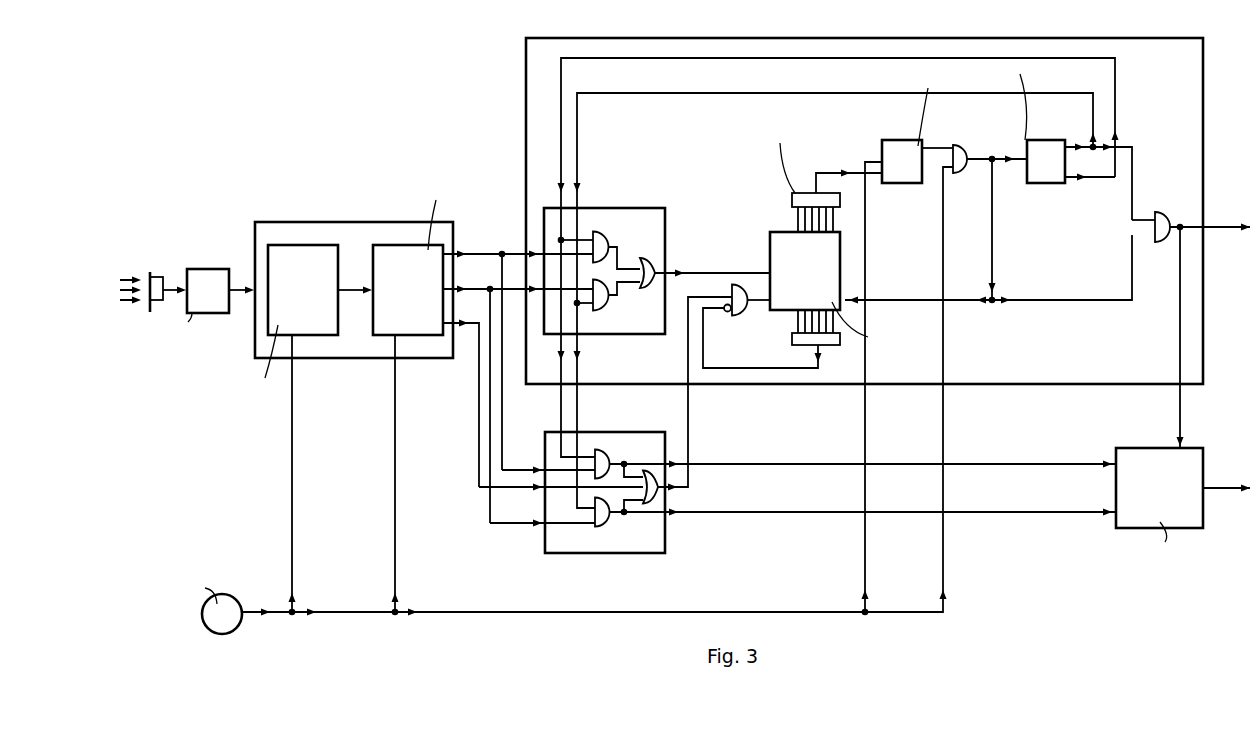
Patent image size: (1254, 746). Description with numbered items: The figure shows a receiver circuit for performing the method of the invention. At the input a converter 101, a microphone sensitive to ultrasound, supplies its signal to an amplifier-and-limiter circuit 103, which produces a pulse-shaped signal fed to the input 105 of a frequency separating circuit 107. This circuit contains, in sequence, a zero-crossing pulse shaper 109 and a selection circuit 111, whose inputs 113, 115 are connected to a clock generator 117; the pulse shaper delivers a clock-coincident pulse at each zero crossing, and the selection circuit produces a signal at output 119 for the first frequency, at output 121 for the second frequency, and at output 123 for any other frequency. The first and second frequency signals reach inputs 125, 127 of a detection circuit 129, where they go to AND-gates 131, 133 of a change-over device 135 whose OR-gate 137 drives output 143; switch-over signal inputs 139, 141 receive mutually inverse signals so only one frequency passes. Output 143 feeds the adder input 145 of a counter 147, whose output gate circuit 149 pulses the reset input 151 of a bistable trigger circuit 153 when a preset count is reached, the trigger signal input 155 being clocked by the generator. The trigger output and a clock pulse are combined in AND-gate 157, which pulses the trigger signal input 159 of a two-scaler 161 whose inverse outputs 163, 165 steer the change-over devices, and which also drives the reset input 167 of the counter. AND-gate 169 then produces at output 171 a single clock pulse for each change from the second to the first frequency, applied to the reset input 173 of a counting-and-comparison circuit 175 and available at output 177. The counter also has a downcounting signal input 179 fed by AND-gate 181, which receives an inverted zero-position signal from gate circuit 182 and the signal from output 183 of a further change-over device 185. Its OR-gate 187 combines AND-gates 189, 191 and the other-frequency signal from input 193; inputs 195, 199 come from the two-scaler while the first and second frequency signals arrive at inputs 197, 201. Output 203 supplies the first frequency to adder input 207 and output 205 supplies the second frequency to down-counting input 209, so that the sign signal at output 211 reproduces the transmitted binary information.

The converter 101 is at (158, 276).
The amplifier-and-limiter circuit 103 is at (203, 268).
The input 105 is at (253, 297).
The frequency separating circuit 107 is at (280, 222).
The zero-crossing pulse shaper 109 is at (318, 244).
The selection circuit 111 is at (400, 244).
The input 113 is at (293, 340).
The input 115 is at (395, 340).
The clock generator 117 is at (222, 595).
The output 119 is at (458, 252).
The output 121 is at (443, 267).
The output 123 is at (443, 307).
The input 125 is at (518, 253).
The input 127 is at (522, 296).
The detection circuit 129 is at (526, 66).
The AND-gate 131 is at (602, 238).
The AND-gate 133 is at (605, 304).
The change-over device 135 is at (640, 207).
The OR-gate 137 is at (650, 259).
The switch-over signal input 139 is at (561, 206).
The switch-over signal input 141 is at (578, 206).
The output 143 is at (675, 271).
The adder input 145 is at (770, 266).
The counter 147 is at (778, 232).
The output gate circuit 149 is at (800, 193).
The reset input 151 is at (883, 184).
The bistable trigger circuit 153 is at (918, 146).
The trigger signal input 155 is at (882, 159).
The AND-gate 157 is at (958, 146).
The trigger signal input 159 is at (1027, 160).
The bistable trigger circuit 161 is at (1043, 140).
The output 163 is at (1068, 148).
The output 165 is at (1068, 178).
The reset input 167 is at (848, 296).
The AND-gate 169 is at (1158, 215).
The output 171 is at (1172, 222).
The reset input 173 is at (1183, 447).
The counting-and-comparison circuit 175 is at (1203, 460).
The output 177 is at (1205, 226).
The downcounting signal input 179 is at (766, 312).
The AND-gate 181 is at (740, 317).
The gate circuit 182 is at (779, 342).
The output 183 is at (672, 490).
The further change-over device 185 is at (658, 432).
The OR-gate 187 is at (652, 504).
The AND-gate 189 is at (611, 461).
The AND-gate 191 is at (605, 525).
The input 193 is at (545, 488).
The input 195 is at (561, 433).
The input 197 is at (544, 468).
The input 199 is at (578, 433).
The input 201 is at (545, 524).
The output 203 is at (672, 460).
The output 205 is at (672, 516).
The adder input 207 is at (1115, 460).
The down-counting input 209 is at (1115, 515).
The output 211 is at (1205, 490).